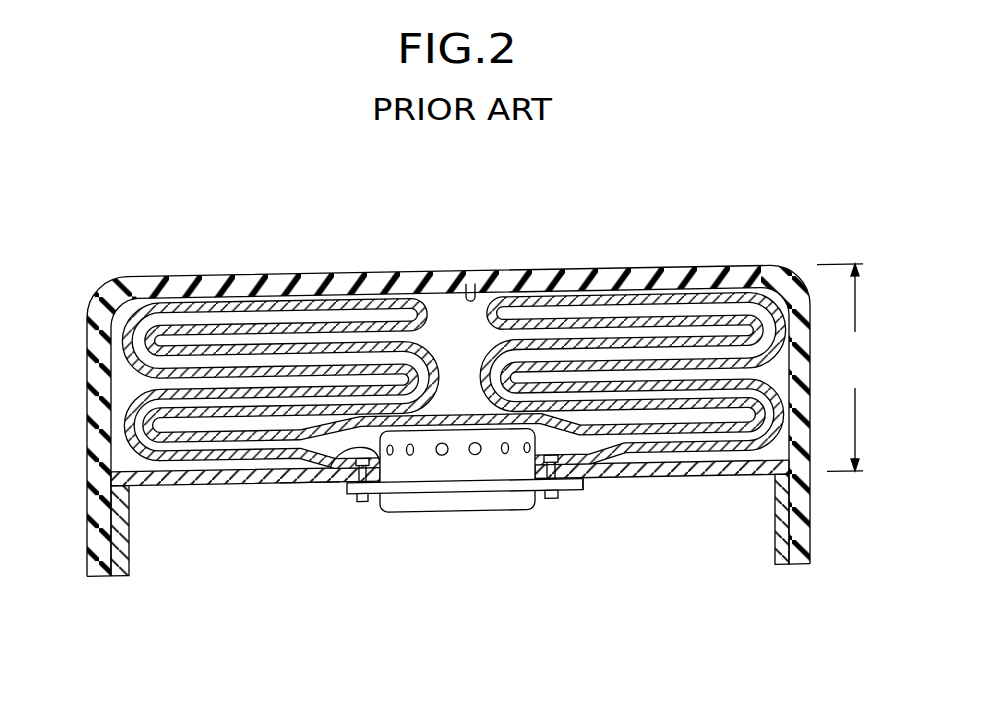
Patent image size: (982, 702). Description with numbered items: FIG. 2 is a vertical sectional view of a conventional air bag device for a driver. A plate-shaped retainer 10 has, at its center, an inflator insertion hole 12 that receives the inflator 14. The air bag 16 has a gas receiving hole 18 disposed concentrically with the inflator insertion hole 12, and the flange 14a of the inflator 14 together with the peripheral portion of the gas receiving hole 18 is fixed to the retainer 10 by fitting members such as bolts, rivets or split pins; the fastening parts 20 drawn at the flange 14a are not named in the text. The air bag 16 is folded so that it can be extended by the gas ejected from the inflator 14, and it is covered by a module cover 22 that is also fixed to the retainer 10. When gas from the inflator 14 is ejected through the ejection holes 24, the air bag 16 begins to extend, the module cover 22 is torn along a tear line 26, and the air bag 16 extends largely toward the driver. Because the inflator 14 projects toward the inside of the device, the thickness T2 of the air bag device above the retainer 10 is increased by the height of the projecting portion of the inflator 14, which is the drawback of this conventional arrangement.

The retainer 10 is at (653, 481).
The inflator insertion hole 12 is at (582, 481).
The inflator 14 is at (466, 512).
The flange 14a is at (347, 489).
The air bag 16 is at (600, 296).
The gas receiving hole 18 is at (306, 482).
The screw 20 is at (362, 501).
The module cover 22 is at (229, 298).
The ejection holes 24 is at (442, 456).
The tear line 26 is at (473, 293).
The thickness T2 is at (844, 368).